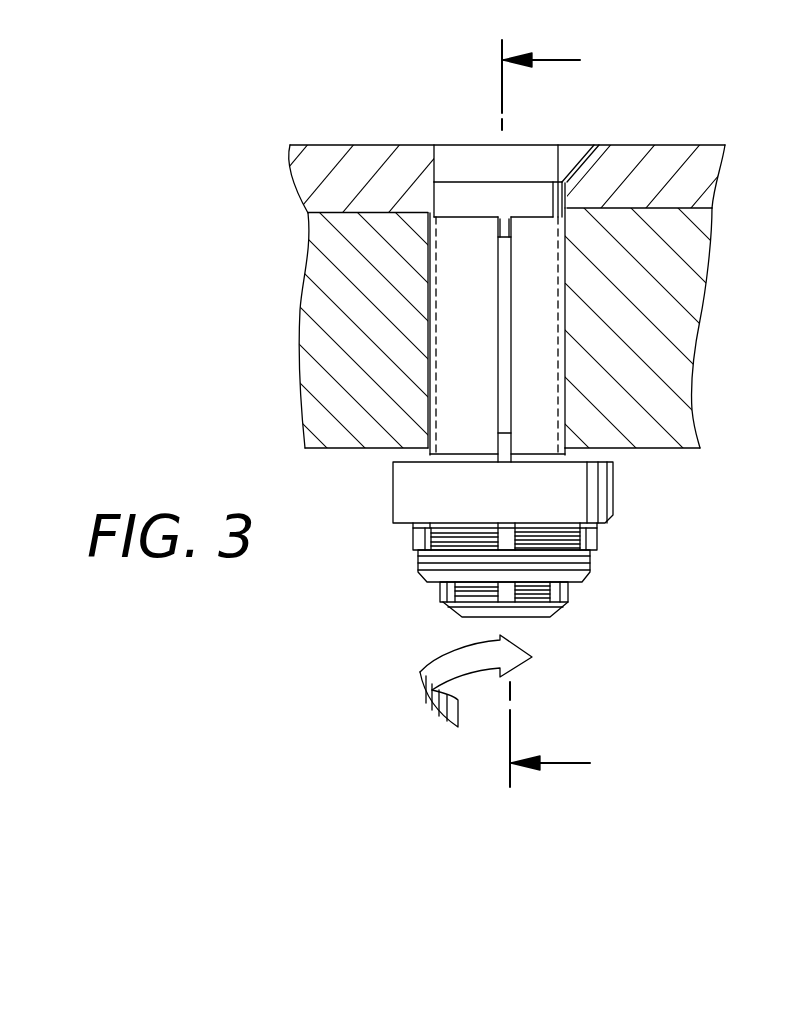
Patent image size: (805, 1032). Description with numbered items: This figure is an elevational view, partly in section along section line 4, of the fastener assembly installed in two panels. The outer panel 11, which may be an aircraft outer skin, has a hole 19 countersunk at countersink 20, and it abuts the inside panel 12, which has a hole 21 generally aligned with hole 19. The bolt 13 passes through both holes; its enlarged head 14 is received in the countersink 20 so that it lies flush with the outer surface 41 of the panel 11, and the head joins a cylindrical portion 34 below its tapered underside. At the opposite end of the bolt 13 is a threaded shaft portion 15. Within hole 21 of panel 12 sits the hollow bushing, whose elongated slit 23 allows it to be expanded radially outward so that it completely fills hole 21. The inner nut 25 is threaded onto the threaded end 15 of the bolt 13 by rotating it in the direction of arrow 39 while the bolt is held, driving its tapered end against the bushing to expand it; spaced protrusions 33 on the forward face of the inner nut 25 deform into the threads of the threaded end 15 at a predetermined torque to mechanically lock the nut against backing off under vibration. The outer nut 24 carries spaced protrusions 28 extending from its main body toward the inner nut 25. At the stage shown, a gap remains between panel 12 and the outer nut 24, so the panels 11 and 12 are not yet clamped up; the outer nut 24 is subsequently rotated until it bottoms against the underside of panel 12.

The section line 4- 4 is at (528, 413).
The panel 11 is at (336, 182).
The inside panel 12 is at (322, 378).
The bolt 13 is at (480, 365).
The head 14 is at (557, 170).
The threaded shaft portion 15 is at (472, 598).
The hole 19 is at (435, 203).
The countersink 20 is at (433, 182).
The hole 21 is at (427, 347).
The elongated slit 23 is at (510, 372).
The outer nut 24 is at (622, 489).
The inner nut 25 is at (417, 557).
The protrusions 28 is at (598, 540).
The protrusions 33 is at (567, 588).
The cylindrical portion 34 is at (500, 204).
The arrow 39 is at (432, 672).
The outer surface 41 is at (675, 143).